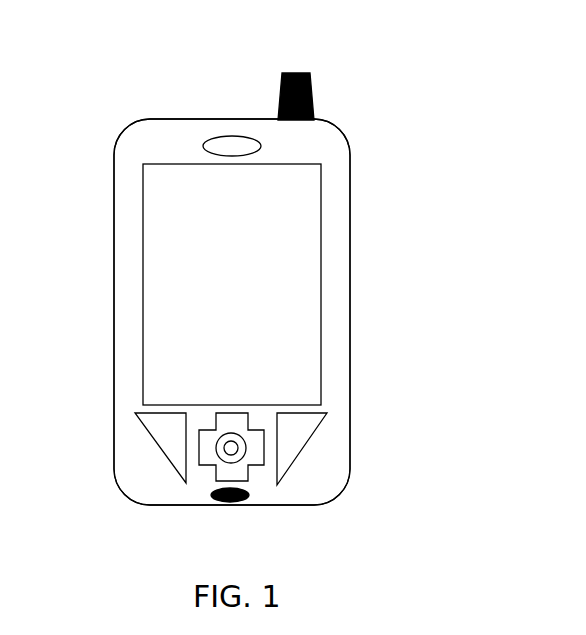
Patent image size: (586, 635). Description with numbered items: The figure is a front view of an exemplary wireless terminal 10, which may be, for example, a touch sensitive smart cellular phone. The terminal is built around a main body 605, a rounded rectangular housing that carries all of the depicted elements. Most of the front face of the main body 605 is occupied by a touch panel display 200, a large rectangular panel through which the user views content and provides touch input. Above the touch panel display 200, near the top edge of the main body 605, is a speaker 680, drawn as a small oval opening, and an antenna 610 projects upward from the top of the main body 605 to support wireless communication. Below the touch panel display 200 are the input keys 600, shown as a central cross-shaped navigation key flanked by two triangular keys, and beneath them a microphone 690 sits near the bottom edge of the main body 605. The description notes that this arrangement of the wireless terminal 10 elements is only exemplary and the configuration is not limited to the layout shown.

The wireless terminal 10 is at (137, 113).
The touch panel display 200 is at (167, 267).
The main body 605 is at (350, 222).
The antenna 610 is at (314, 87).
The speaker 680 is at (215, 135).
The microphone 690 is at (247, 495).
The input keys 600 is at (208, 463).